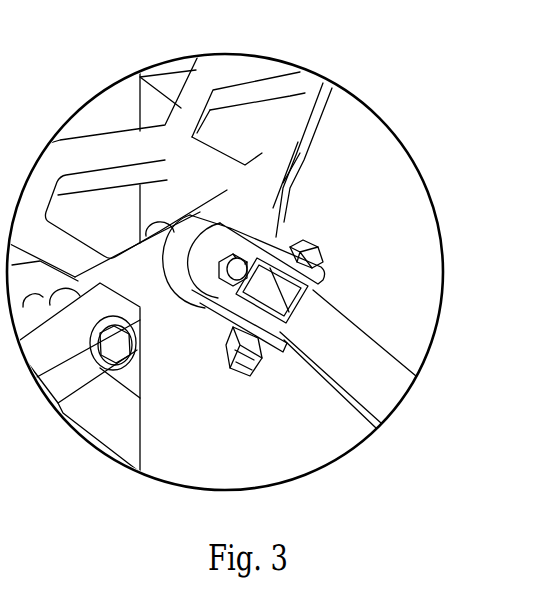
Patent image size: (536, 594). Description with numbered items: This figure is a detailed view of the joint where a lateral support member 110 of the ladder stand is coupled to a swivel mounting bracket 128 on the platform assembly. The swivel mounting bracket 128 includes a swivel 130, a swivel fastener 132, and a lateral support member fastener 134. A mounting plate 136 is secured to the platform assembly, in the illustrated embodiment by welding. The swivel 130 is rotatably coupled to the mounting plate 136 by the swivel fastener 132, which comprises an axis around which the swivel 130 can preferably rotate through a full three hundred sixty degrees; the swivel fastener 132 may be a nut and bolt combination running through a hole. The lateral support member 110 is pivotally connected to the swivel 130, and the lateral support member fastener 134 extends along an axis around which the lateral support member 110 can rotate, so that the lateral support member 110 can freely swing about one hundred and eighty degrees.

The lateral support member 110 is at (383, 370).
The swivel mounting bracket 128 is at (323, 223).
The swivel 130 is at (270, 243).
The swivel fastener 132 is at (247, 260).
The lateral support member fastener 134 is at (336, 260).
The mounting plate 136 is at (177, 273).